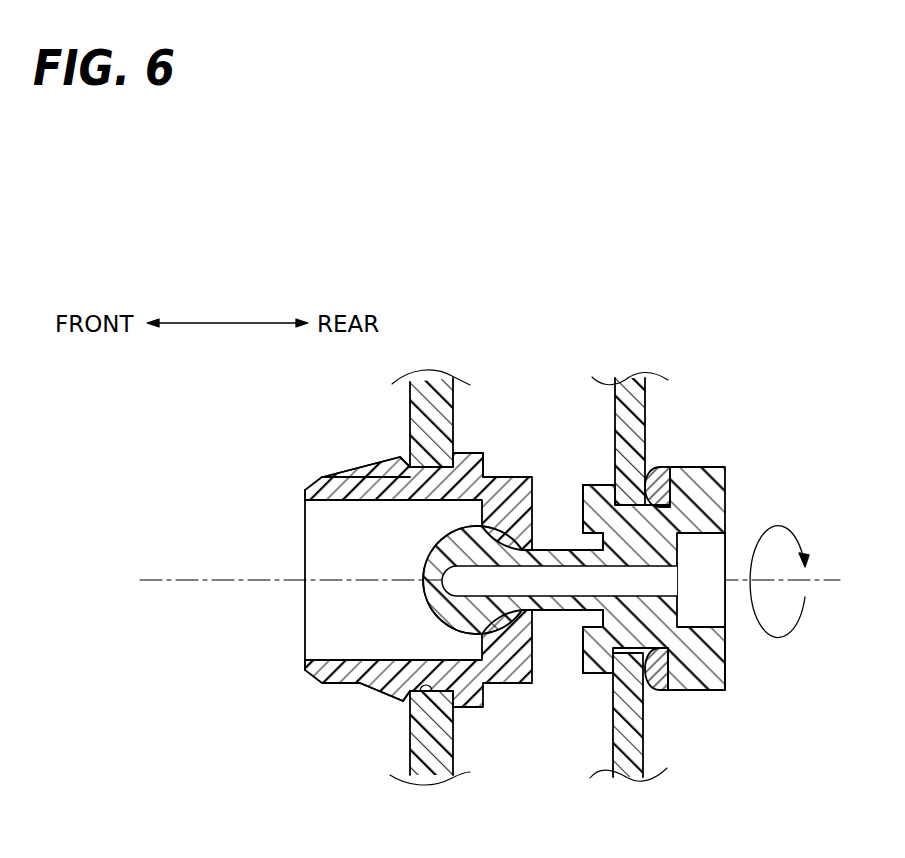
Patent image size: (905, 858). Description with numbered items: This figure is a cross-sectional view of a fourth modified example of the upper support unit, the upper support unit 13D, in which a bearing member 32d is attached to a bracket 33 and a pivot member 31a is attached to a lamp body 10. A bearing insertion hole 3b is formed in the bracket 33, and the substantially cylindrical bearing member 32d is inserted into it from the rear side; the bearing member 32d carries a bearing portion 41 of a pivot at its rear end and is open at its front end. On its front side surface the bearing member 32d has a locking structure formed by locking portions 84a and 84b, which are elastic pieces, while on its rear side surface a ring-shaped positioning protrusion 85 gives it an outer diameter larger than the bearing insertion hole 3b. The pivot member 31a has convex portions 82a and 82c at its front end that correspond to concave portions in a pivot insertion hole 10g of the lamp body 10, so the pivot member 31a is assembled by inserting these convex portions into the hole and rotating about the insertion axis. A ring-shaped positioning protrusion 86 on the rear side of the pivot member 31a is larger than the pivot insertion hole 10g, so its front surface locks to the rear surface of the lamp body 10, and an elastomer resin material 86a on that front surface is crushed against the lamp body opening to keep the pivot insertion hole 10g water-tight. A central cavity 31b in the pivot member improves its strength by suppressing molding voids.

The upper support unit 13D is at (590, 354).
The lamp body 10 is at (636, 424).
The pivot insertion hole 10g is at (643, 442).
The pivot member 31a is at (678, 530).
The cavity 31b is at (662, 587).
The bearing member 32d is at (334, 478).
The bracket 33 is at (442, 755).
The bearing insertion hole 3b is at (430, 686).
The bearing portion 41 is at (500, 645).
The convex portion 82a is at (596, 488).
The convex portion 82c is at (586, 674).
The locking portion 84a is at (400, 701).
The locking portion 84b is at (397, 460).
The positioning protrusion 85 is at (484, 453).
The positioning protrusion 86 is at (695, 682).
The elastomer resin material 86a is at (654, 690).